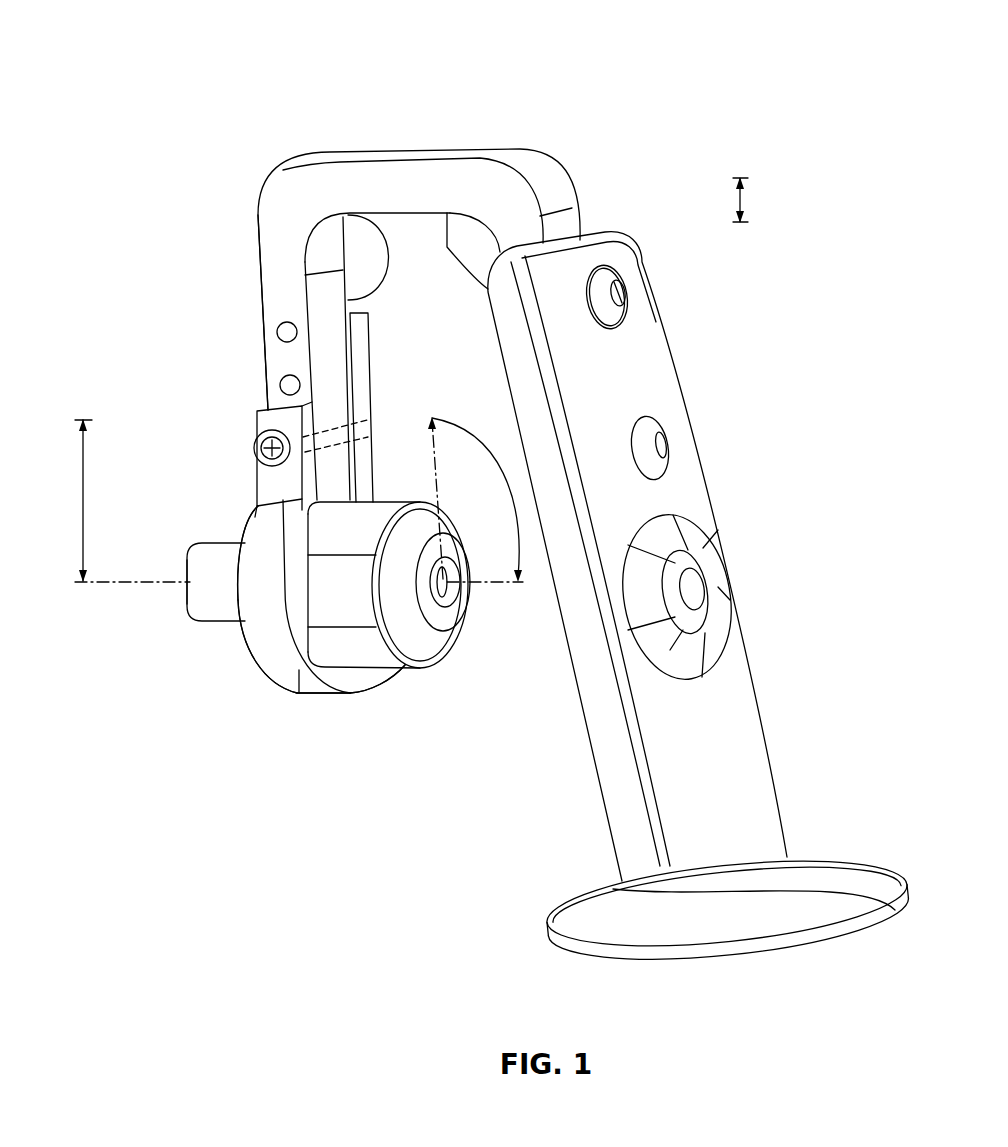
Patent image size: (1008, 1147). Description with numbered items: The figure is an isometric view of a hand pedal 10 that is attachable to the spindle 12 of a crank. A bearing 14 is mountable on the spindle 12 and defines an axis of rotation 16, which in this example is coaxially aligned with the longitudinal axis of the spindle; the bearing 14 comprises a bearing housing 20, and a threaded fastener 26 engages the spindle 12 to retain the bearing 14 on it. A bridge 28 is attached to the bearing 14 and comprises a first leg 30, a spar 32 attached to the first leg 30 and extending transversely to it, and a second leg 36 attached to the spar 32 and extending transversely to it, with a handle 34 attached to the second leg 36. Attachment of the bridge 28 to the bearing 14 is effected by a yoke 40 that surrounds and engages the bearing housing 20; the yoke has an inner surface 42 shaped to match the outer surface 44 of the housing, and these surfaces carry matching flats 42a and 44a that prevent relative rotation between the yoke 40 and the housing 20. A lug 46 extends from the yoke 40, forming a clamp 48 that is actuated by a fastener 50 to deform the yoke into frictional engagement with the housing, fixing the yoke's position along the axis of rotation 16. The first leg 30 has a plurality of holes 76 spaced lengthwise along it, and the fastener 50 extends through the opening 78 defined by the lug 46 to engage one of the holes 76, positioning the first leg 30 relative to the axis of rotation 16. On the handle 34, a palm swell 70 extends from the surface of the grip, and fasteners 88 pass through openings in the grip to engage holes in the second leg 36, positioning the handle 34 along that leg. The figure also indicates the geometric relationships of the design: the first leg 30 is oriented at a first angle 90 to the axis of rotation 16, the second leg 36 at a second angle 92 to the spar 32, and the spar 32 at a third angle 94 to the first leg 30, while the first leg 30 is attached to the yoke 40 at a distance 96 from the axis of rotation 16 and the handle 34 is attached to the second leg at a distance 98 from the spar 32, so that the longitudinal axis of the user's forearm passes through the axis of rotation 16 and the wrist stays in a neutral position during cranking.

The hand pedal 10 is at (150, 80).
The spindle 12 is at (200, 606).
The bearing 14 is at (407, 662).
The axis of rotation 16 is at (100, 587).
The bearing housing 20 is at (300, 695).
The threaded fastener 26 is at (447, 604).
The bridge 28 is at (256, 227).
The first leg 30 is at (261, 288).
The spar 32 is at (416, 151).
The handle 34 is at (752, 663).
The second leg 36 is at (580, 217).
The yoke 40 is at (272, 682).
The inner surface 42 is at (333, 483).
The flat 42a is at (322, 595).
The outer surface 44 is at (365, 673).
The flat 44a is at (243, 625).
The lug 46 is at (257, 428).
The clamp 48 is at (172, 540).
The fastener 50 is at (259, 464).
The palm swell 70 is at (702, 548).
The holes 76 is at (277, 336).
The opening 78 is at (328, 423).
The fastener 88 is at (627, 292).
The first angle 90 is at (503, 476).
The second angle 92 is at (447, 250).
The third angle 94 is at (376, 274).
The distance 96 is at (80, 502).
The distance 98 is at (745, 207).